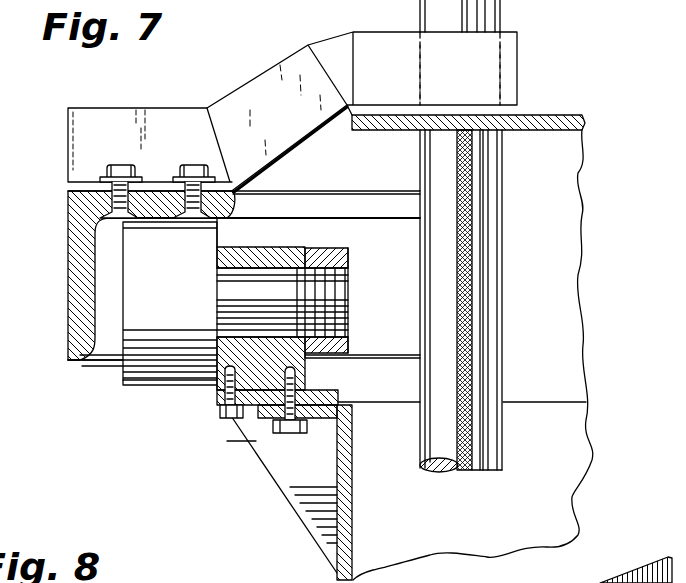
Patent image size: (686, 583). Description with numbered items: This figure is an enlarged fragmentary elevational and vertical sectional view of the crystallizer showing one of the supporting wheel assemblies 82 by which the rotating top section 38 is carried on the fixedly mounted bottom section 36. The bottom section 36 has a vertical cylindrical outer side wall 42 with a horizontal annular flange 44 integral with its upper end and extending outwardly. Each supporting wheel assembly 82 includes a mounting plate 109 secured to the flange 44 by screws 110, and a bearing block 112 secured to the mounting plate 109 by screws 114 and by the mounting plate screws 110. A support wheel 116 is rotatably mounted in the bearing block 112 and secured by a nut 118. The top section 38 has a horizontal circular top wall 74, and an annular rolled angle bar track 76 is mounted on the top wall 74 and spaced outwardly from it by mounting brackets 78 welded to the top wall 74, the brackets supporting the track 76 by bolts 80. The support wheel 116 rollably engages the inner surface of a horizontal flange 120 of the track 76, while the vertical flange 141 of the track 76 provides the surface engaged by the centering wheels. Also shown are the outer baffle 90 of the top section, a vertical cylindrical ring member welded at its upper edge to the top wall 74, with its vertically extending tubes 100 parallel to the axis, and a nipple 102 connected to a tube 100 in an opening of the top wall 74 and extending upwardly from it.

The bottom section 36 is at (337, 567).
The top section 38 is at (594, 122).
The outer side wall 42 is at (328, 488).
The flange 44 is at (252, 445).
The top wall 74 is at (548, 116).
The track 76 is at (67, 256).
The mounting brackets 78 is at (250, 92).
The bolts 80 is at (147, 196).
The supporting wheel assemblies 82 is at (100, 426).
The outer baffle 90 is at (504, 195).
The tubes 100 is at (490, 250).
The nipples 102 is at (502, 15).
The mounting plate 109 is at (336, 393).
The screws 110 is at (287, 426).
The bearing block 112 is at (250, 248).
The screws 114 is at (224, 420).
The support wheel 116 is at (141, 388).
The nut 118 is at (330, 252).
The horizontal flange 120 is at (236, 204).
The vertical flange 141 is at (79, 361).